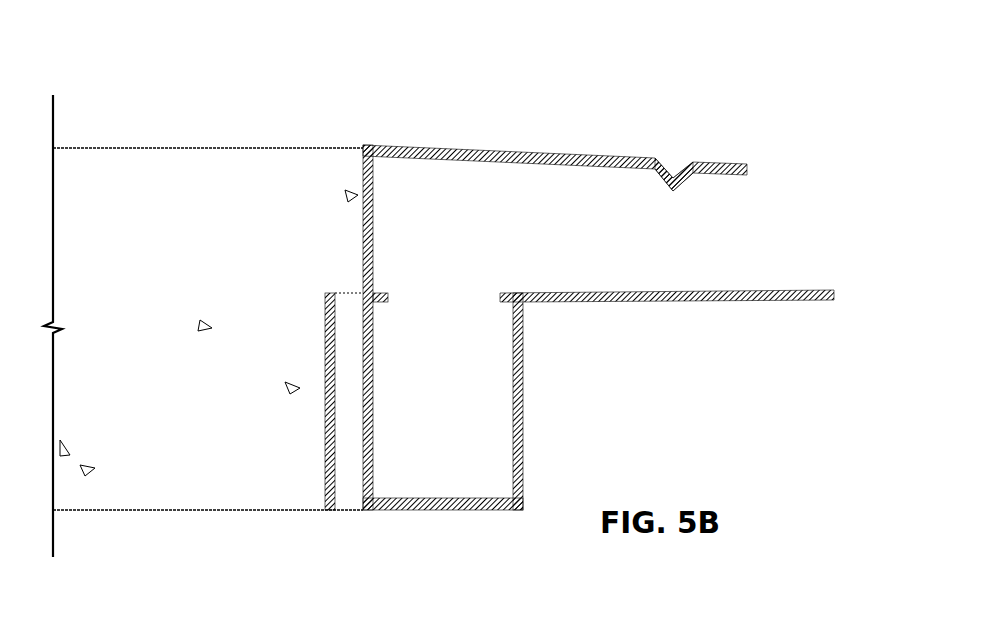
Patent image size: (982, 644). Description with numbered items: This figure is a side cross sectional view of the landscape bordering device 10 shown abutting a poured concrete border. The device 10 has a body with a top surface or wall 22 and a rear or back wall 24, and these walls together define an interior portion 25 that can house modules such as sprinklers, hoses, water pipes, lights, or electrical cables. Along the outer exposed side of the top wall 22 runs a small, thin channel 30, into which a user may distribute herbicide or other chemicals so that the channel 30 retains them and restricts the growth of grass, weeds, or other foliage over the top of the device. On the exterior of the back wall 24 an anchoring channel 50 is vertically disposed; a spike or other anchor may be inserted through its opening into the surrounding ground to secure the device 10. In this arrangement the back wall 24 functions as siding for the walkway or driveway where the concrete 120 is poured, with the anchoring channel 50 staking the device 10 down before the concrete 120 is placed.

The bordering system or device 10 is at (538, 264).
The top surface or wall 22 is at (492, 152).
The rear or back surface or wall 24 is at (369, 228).
The interior portion 25 is at (483, 246).
The channel 30 is at (679, 156).
The anchoring channel 50 is at (343, 421).
The adjacent surface 120 is at (213, 206).